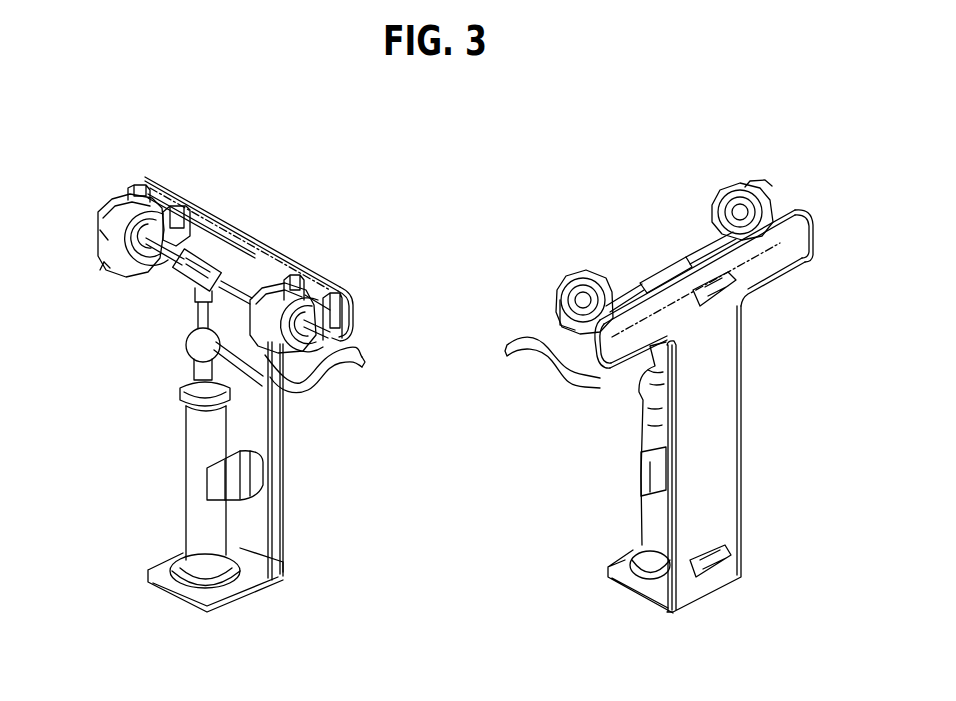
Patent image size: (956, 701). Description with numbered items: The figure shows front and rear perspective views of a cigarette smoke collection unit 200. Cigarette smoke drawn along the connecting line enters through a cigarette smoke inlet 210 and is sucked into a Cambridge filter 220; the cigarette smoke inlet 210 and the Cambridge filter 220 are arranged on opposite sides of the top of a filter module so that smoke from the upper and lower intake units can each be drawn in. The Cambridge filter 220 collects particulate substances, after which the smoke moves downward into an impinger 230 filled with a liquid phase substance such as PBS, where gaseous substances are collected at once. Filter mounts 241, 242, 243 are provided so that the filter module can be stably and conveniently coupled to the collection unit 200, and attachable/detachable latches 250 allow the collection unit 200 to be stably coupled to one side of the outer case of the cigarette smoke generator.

The cigarette smoke collection unit 200 is at (456, 124).
The cigarette smoke inlet 210 is at (229, 356).
The Cambridge filter 220 is at (105, 264).
The impinger 230 is at (185, 517).
The filter mount 241 is at (140, 186).
The filter mount 242 is at (293, 278).
The filter mount 243 is at (242, 487).
The attachable/detachable latch 250 is at (723, 552).